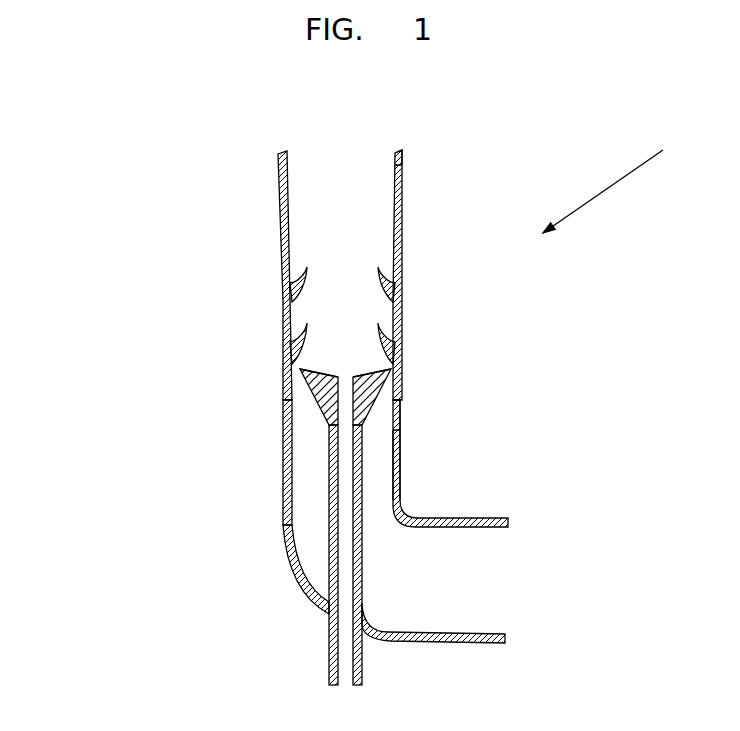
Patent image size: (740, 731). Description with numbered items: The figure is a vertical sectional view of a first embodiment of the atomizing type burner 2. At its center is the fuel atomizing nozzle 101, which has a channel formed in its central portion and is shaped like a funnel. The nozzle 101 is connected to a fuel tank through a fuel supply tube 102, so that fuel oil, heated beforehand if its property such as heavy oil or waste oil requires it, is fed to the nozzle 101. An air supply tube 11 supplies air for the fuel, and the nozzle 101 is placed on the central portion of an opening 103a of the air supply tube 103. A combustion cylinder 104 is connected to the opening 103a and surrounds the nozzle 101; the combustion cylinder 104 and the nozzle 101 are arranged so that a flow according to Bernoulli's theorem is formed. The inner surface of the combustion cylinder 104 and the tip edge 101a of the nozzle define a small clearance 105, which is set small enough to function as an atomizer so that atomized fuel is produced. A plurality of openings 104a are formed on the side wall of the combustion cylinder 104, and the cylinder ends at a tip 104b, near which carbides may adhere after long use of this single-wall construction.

The atomizing type burner 2 is at (612, 185).
The air supply tube 11 is at (400, 462).
The fuel atomizing nozzle 101 is at (335, 414).
The tip edge of the nozzle 101a is at (323, 370).
The fuel supply tube 102 is at (328, 548).
The air supply tube 103 is at (400, 490).
The opening of the air supply tube 103a is at (402, 423).
The combustion cylinder 104 is at (398, 210).
The openings 104a is at (283, 276).
The tip of the combustion cylinder 104b is at (392, 160).
The small clearance 105 is at (297, 386).